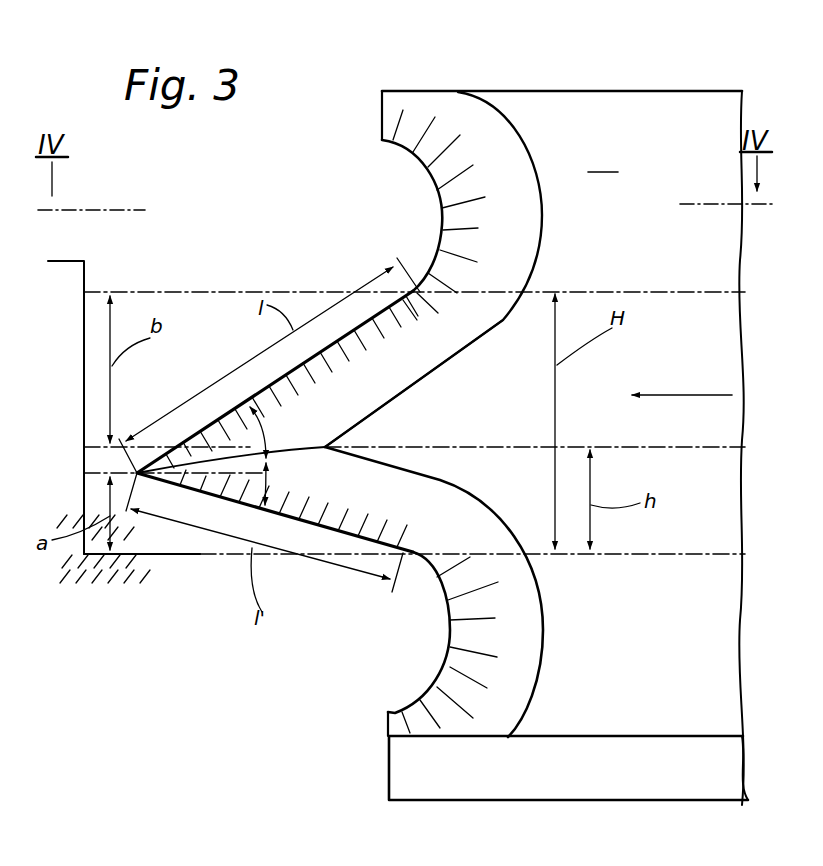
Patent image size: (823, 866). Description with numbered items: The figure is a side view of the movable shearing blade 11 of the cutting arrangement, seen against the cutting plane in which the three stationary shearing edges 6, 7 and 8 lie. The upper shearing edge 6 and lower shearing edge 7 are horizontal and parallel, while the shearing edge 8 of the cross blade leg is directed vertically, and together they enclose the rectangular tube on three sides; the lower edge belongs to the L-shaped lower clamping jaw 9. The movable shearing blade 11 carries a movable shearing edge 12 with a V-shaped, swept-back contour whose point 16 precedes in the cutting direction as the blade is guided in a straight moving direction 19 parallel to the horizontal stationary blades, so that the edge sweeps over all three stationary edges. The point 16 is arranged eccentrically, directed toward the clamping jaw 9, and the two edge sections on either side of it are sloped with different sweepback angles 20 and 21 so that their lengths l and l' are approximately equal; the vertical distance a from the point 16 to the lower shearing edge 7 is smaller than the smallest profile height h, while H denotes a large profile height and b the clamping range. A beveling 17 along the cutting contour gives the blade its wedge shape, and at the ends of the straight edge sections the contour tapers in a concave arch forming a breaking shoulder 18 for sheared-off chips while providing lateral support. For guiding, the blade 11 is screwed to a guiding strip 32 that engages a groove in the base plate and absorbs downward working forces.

The shearing edge 6 is at (235, 290).
The shearing edge 7 is at (200, 557).
The shearing edge 8 is at (83, 372).
The lower clamping jaw 9 is at (100, 594).
The movable shearing blade 11 is at (609, 88).
The movable shearing edge 12 is at (276, 379).
The point 16 is at (137, 473).
The beveling 17 is at (387, 480).
The breaking shoulder 18 is at (436, 196).
The moving direction 19 is at (684, 395).
The sweepback angle 20 is at (262, 435).
The sweepback angle 21 is at (264, 490).
The guiding strip 32 is at (548, 782).